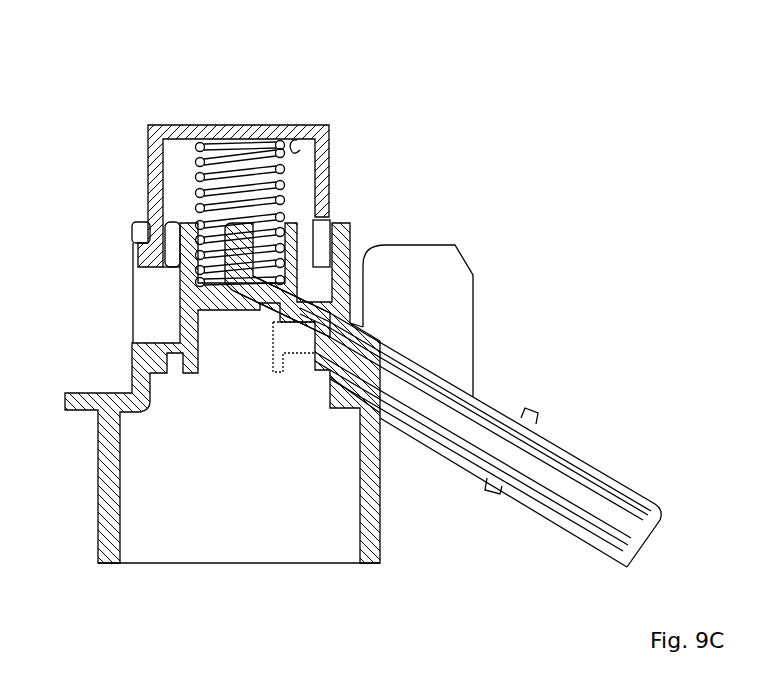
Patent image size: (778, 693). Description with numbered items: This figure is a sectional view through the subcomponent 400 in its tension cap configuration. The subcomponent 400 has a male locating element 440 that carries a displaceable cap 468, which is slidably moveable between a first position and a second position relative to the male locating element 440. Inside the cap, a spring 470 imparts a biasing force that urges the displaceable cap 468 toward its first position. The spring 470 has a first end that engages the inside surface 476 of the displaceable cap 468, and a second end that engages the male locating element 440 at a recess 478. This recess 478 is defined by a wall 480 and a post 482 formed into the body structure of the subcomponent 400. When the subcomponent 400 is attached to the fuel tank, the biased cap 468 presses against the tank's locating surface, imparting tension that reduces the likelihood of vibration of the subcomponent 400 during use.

The subcomponent 400 is at (410, 104).
The male locating element 440 is at (95, 180).
The displaceable cap 468 is at (198, 130).
The spring 470 is at (273, 203).
The inside surface 476 is at (300, 150).
The recess 478 is at (192, 243).
The wall 480 is at (186, 274).
The post 482 is at (243, 253).